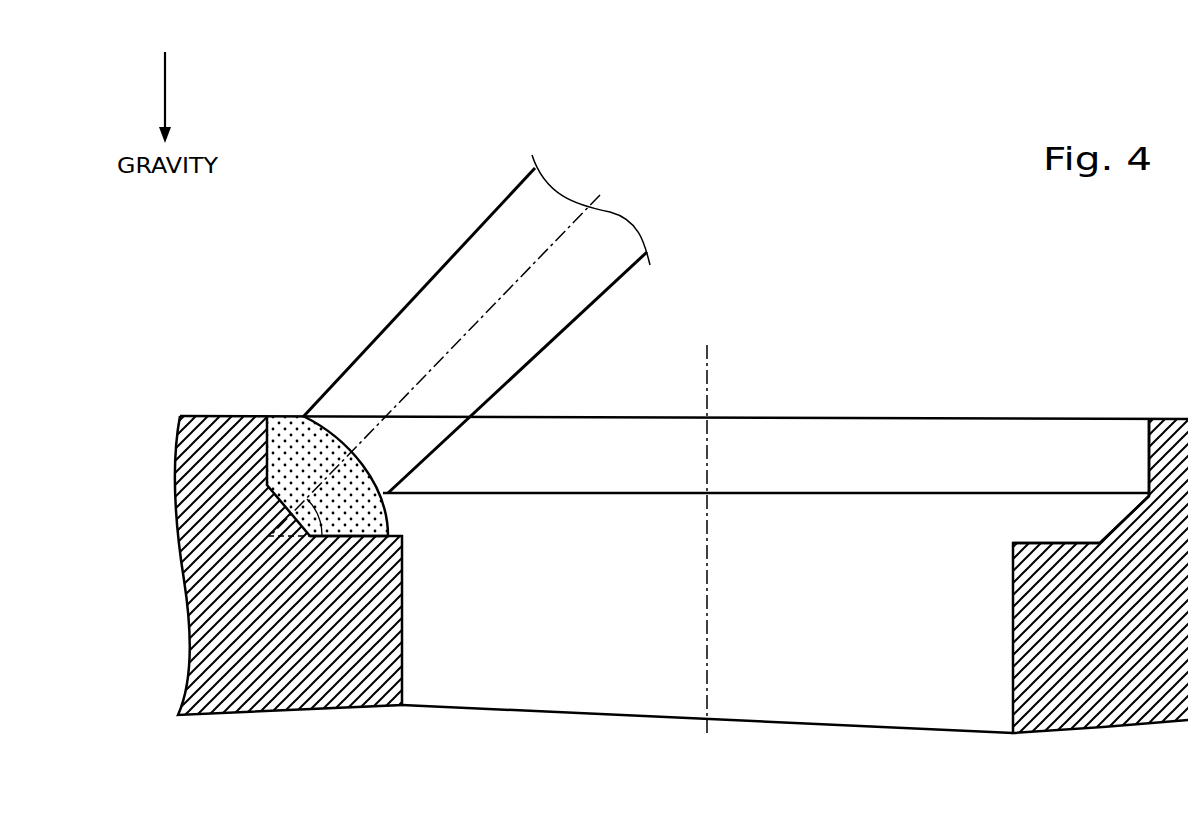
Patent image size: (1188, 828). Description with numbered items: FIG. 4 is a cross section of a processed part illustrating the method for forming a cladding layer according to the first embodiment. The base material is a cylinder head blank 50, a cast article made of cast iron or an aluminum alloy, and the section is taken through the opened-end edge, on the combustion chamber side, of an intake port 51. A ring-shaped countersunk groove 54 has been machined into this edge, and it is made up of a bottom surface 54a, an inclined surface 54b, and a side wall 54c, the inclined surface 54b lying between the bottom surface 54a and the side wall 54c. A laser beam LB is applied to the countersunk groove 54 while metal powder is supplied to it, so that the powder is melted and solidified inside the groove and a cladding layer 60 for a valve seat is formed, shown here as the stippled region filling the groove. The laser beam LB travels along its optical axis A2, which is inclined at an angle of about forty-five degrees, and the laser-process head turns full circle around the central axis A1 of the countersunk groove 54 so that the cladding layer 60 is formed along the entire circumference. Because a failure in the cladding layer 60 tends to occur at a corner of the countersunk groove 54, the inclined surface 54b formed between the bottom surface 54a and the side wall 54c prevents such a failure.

The cylinder head blank 50 is at (240, 416).
The intake port 51 is at (667, 703).
The countersunk groove 54 is at (1136, 419).
The bottom surface 54a is at (1068, 542).
The inclined surface 54b is at (1110, 542).
The side wall 54c is at (1148, 458).
The cladding layer 60 is at (285, 428).
The laser beam LB is at (503, 215).
The central axis A1 is at (705, 522).
The optical axis A2 is at (451, 353).